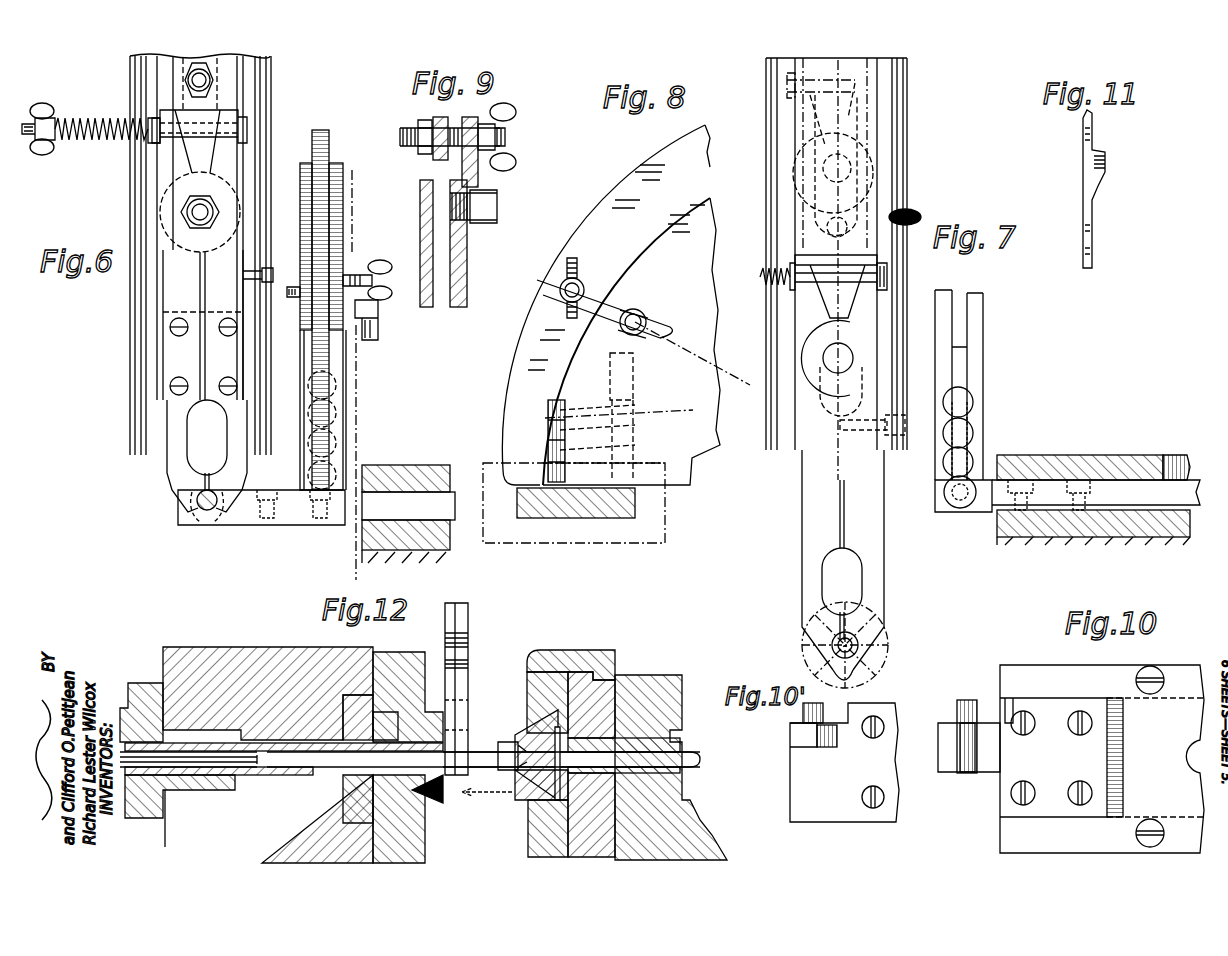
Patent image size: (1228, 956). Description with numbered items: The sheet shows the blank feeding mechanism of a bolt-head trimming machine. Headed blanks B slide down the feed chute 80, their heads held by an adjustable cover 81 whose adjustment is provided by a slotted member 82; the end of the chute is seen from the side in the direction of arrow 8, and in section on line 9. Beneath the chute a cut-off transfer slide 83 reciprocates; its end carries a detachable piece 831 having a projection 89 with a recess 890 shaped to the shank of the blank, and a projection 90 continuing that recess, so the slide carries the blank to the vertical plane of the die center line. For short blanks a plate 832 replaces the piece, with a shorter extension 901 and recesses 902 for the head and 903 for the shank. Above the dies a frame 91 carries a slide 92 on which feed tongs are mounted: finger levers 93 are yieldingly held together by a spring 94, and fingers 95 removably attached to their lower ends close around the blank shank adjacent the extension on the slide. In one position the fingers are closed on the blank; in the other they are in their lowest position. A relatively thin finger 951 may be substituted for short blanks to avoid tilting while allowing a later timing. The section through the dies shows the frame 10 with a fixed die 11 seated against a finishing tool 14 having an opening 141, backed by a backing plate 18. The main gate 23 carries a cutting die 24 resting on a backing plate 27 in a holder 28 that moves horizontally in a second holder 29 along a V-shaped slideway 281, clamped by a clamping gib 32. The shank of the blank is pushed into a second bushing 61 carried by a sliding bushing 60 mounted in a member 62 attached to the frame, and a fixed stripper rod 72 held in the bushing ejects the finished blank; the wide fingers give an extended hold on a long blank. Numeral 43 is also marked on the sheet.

In FIG. 6, the arrow 8 is at (368, 431).
In FIG. 8, the section line 9 is at (560, 290).
In FIG. 7, the section line 9 is at (846, 269).
In FIG. 12, the frame 10 is at (228, 655).
In FIG. 7, the fixed die 11 is at (883, 643).
In FIG. 12, the fixed die 11 is at (425, 800).
In FIG. 12, the finishing tool 14 is at (390, 717).
In FIG. 12, the backing plate 18 is at (353, 693).
In FIG. 12, the main gate 23 is at (668, 682).
In FIG. 12, the cutting die 24 is at (525, 730).
In FIG. 12, the backing plate 27 is at (532, 808).
In FIG. 12, the holder 28 is at (542, 677).
In FIG. 12, the second holder 29 is at (610, 690).
In FIG. 12, the clamping gib 32 is at (595, 650).
In FIG. 12, the shaft end 43 is at (688, 765).
In FIG. 12, the sliding bushing 60 is at (280, 777).
In FIG. 12, the second bushing 61 is at (328, 772).
In FIG. 12, the member 62 is at (185, 791).
In FIG. 12, the fixed stripper rod 72 is at (247, 777).
In FIG. 6, the feed chute 80 is at (340, 225).
In FIG. 9, the feed chute 80 is at (467, 278).
In FIG. 8, the feed chute 80 is at (687, 453).
In FIG. 7, the feed chute 80 is at (978, 387).
In FIG. 6, the adjustable cover 81 is at (325, 363).
In FIG. 9, the adjustable cover 81 is at (432, 125).
In FIG. 8, the adjustable cover 81 is at (527, 350).
In FIG. 7, the adjustable cover 81 is at (962, 360).
In FIG. 6, the slotted member 82 is at (363, 352).
In FIG. 9, the slotted member 82 is at (480, 170).
In FIG. 8, the slotted member 82 is at (596, 282).
In FIG. 6, the cut-off transfer slide 83 is at (423, 497).
In FIG. 8, the cut-off transfer slide 83 is at (527, 517).
In FIG. 7, the cut-off transfer slide 83 is at (1118, 483).
In FIG. 10, the cut-off transfer slide 83 is at (1113, 703).
In FIG. 6, the projection 89 is at (208, 527).
In FIG. 7, the projection 89 is at (983, 512).
In FIG. 10, the projection 89 is at (940, 755).
In FIG. 10, the projection 90 is at (957, 707).
In FIG. 6, the frame 91 is at (267, 143).
In FIG. 7, the frame 91 is at (903, 118).
In FIG. 6, the slide 92 is at (213, 100).
In FIG. 6, the finger levers 93 is at (213, 297).
In FIG. 12, the finger levers 93 is at (458, 618).
In FIG. 6, the spring 94 is at (99, 145).
In FIG. 7, the spring 94 is at (762, 268).
In FIG. 6, the fingers 95 is at (230, 463).
In FIG. 8, the fingers 95 is at (636, 380).
In FIG. 7, the fingers 95 is at (805, 568).
In FIG. 12, the fingers 95 is at (463, 688).
In FIG. 12, the opening 141 is at (317, 817).
In FIG. 12, the V-shaped slideway 281 is at (535, 835).
In FIG. 10, the detachable piece 831 is at (1042, 703).
In FIG. 10', the plate 832 is at (795, 803).
In FIG. 10, the recess 890 is at (968, 770).
In FIG. 10', the extension 901 is at (800, 708).
In FIG. 10', the recess 902 is at (810, 750).
In FIG. 10', the recess 903 is at (815, 735).
In FIG. 11, the thin finger 951 is at (1097, 205).
In FIG. 6, the blank B is at (197, 502).
In FIG. 8, the blank B is at (555, 417).
In FIG. 7, the blank B is at (867, 683).
In FIG. 12, the blank B is at (480, 750).